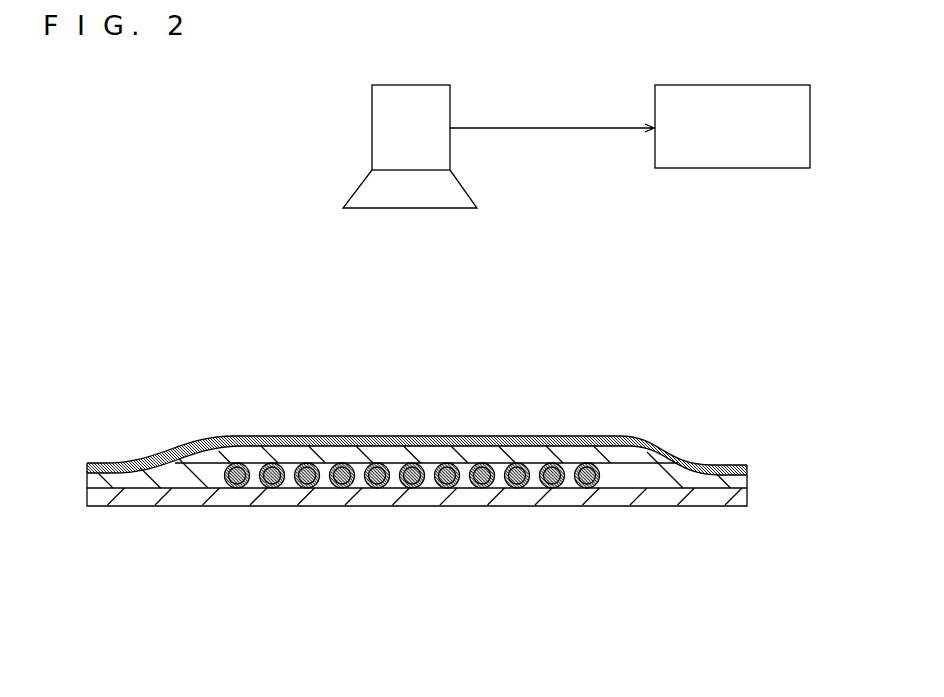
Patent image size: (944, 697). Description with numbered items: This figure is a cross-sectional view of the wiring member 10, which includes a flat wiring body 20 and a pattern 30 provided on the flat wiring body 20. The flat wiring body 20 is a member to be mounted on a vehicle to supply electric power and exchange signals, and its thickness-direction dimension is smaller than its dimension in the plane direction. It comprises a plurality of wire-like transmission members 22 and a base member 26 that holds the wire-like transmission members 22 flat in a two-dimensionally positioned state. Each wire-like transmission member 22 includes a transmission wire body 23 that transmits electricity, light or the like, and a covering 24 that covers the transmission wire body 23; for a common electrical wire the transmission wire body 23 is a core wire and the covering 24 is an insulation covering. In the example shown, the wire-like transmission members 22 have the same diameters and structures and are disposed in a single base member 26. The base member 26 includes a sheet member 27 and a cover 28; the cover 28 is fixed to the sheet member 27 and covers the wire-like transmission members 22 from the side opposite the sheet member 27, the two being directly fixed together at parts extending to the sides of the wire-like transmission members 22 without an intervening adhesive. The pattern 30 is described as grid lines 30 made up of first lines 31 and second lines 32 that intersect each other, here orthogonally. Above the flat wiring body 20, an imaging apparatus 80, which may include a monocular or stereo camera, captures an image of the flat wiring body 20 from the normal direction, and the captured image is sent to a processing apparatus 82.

The wiring member 10 is at (134, 282).
The flat wiring body 20 is at (417, 534).
The wire-like transmission member 22 is at (412, 531).
The transmission wire body 23 is at (376, 484).
The covering 24 is at (388, 480).
The base member 26 is at (417, 517).
The sheet member 27 is at (173, 494).
The cover 28 is at (125, 478).
The pattern 30 is at (417, 404).
The first line 31 is at (115, 463).
The second line 32 is at (262, 437).
The imaging apparatus 80 is at (372, 128).
The processing apparatus 82 is at (708, 168).